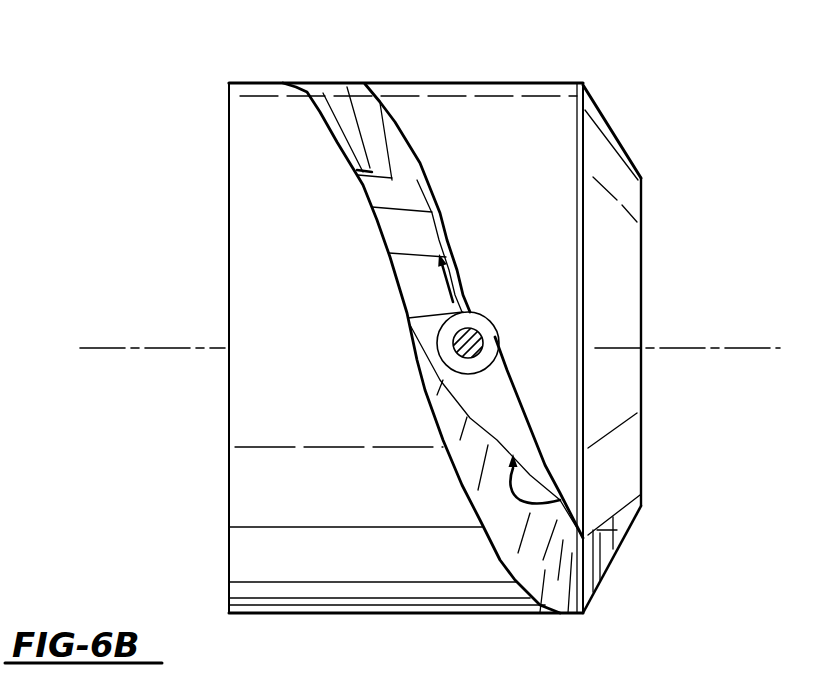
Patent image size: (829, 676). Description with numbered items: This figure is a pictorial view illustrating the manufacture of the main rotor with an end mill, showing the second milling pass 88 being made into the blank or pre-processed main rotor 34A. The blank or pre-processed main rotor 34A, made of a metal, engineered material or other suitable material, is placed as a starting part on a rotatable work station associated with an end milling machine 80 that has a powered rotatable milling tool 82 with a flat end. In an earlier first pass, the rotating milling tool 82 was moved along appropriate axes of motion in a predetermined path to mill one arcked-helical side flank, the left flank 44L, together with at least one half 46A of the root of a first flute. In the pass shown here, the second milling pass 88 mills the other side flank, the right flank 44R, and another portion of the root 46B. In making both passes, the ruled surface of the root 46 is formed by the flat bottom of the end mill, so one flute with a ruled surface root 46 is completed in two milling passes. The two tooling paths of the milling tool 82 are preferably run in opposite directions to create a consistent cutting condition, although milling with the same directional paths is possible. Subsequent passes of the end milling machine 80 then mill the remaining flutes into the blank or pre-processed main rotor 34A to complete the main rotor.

The blank or pre-processed main rotor 34A is at (599, 91).
The left flank 44L is at (378, 246).
The one half of the root of a first flute 46A is at (408, 290).
The second milling pass 88 is at (456, 303).
The end milling machine 80 is at (501, 333).
The milling tool 82 is at (477, 313).
The another portion of the root 46B is at (498, 393).
The right flank 44R is at (522, 423).
The ruled surface root 46 is at (560, 500).